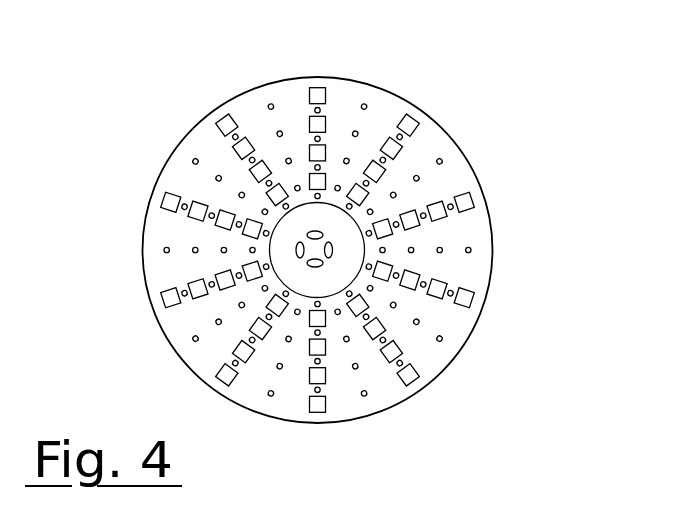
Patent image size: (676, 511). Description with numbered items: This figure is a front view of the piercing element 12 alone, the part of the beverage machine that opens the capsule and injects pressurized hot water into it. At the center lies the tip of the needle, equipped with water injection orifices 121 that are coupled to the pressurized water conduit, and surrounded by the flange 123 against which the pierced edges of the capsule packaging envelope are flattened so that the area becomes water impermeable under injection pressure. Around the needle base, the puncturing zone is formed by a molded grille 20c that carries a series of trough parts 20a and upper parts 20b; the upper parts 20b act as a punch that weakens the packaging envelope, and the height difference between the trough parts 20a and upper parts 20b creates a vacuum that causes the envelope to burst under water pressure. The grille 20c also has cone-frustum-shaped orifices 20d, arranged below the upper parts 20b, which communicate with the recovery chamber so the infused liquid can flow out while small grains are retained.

The piercing element 12 is at (510, 323).
The trough parts 20a is at (312, 170).
The upper parts 20b is at (378, 142).
The molded grille 20c is at (182, 138).
The orifices 20d is at (393, 134).
The water injection orifices 121 is at (328, 249).
The flange 123 is at (288, 273).